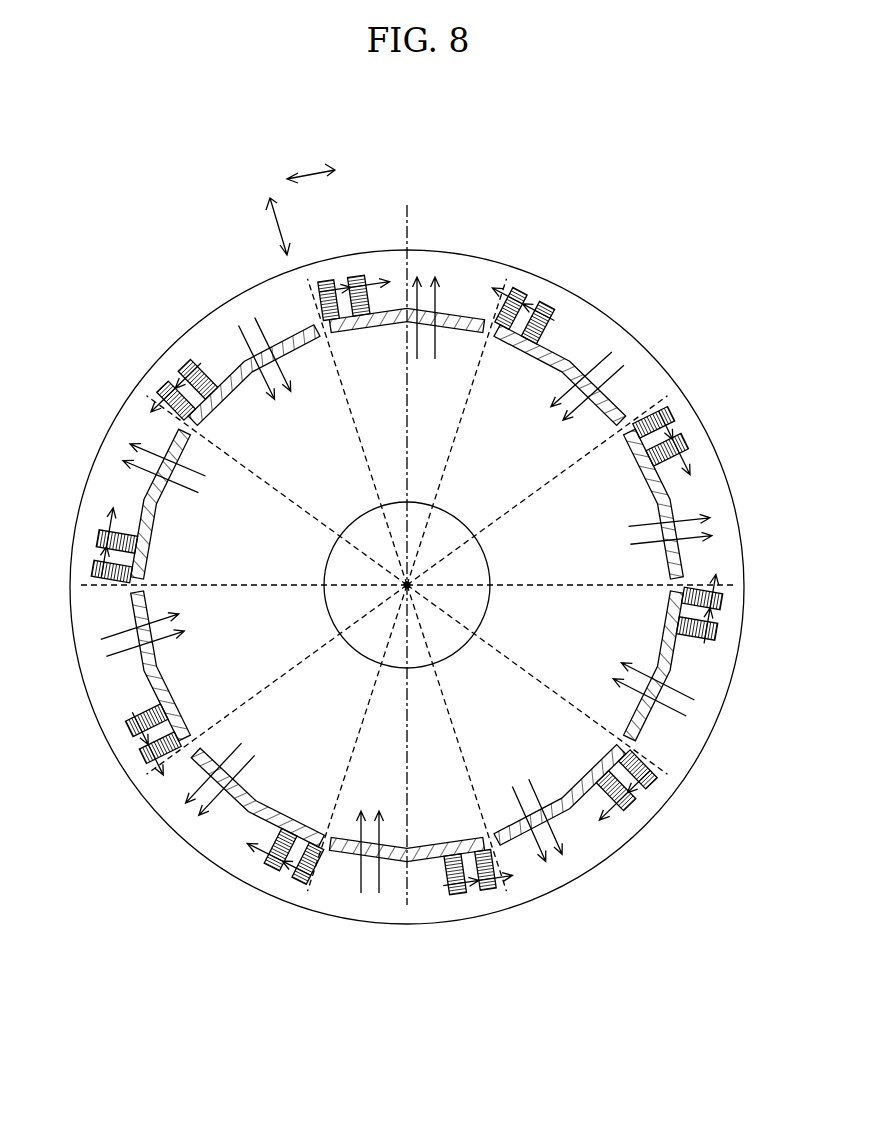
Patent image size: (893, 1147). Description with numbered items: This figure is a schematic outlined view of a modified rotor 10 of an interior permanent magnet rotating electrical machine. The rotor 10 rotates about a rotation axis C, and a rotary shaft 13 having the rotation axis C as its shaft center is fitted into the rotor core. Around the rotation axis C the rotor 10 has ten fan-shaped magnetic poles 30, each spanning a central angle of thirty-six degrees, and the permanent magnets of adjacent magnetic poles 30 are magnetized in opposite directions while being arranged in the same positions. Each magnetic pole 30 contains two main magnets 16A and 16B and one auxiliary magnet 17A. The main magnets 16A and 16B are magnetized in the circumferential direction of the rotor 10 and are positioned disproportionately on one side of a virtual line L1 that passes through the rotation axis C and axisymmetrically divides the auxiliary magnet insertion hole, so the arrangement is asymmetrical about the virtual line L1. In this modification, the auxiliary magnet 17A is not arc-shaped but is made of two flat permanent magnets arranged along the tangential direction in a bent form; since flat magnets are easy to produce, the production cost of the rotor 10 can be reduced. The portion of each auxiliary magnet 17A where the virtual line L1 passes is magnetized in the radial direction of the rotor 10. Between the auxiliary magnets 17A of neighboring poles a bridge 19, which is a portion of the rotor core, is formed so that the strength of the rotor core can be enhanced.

The rotor 10 is at (630, 224).
The rotary shaft 13 is at (448, 645).
The main magnet 16A is at (331, 279).
The main magnet 16B is at (362, 276).
The auxiliary magnet 17A is at (404, 325).
The bridge 19 is at (478, 354).
The magnetic pole 30 is at (423, 266).
The virtual line L1 is at (413, 470).
The rotation axis C is at (410, 584).